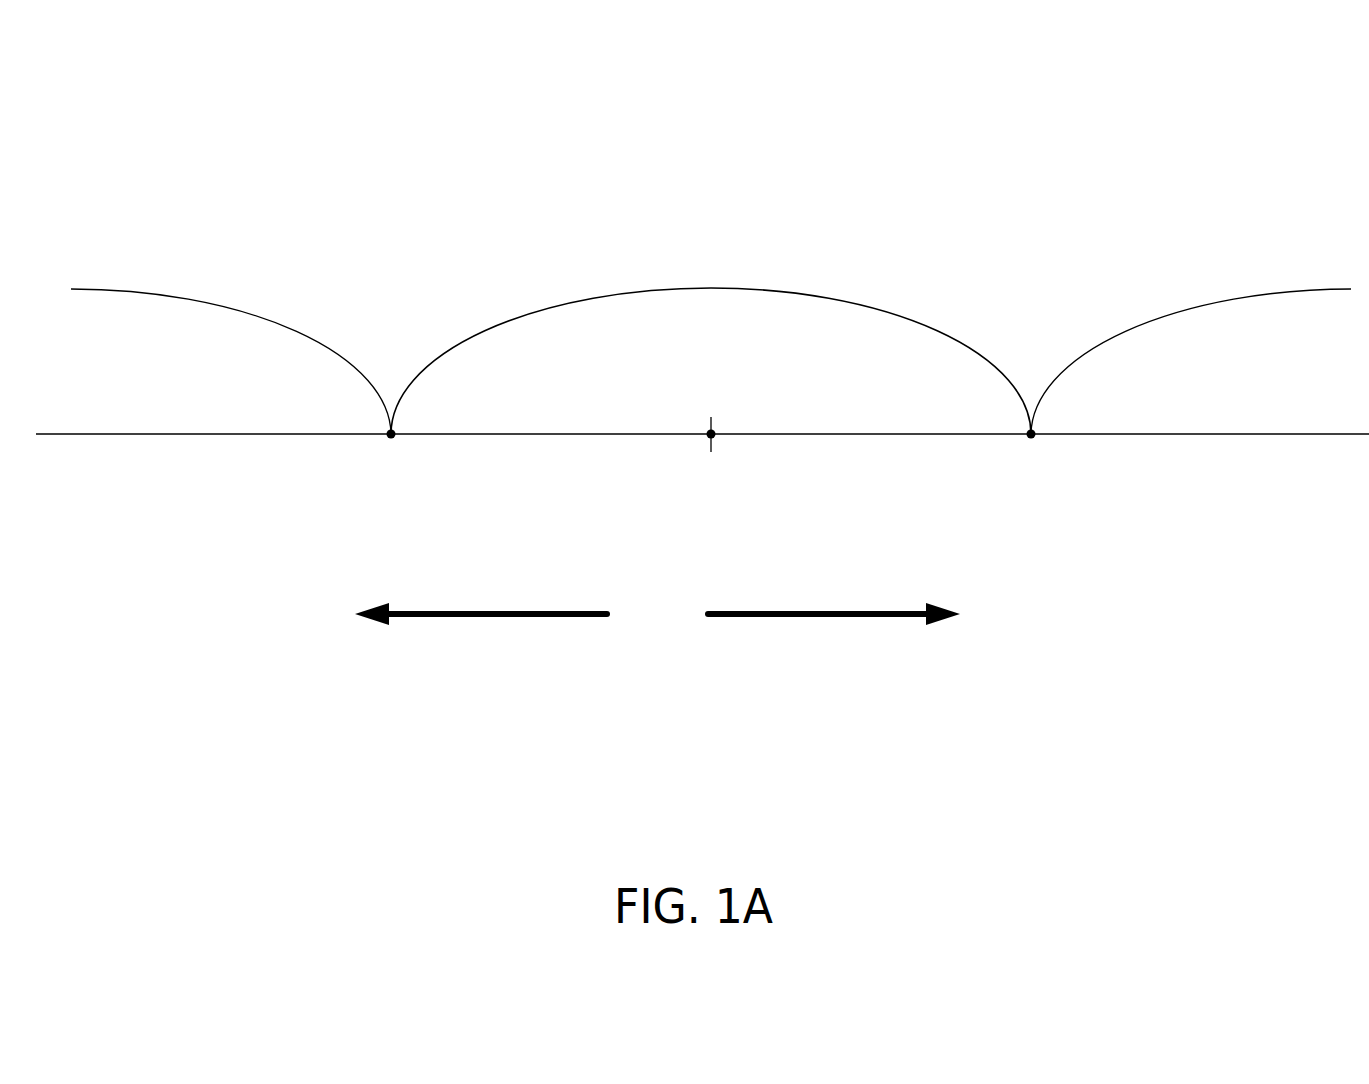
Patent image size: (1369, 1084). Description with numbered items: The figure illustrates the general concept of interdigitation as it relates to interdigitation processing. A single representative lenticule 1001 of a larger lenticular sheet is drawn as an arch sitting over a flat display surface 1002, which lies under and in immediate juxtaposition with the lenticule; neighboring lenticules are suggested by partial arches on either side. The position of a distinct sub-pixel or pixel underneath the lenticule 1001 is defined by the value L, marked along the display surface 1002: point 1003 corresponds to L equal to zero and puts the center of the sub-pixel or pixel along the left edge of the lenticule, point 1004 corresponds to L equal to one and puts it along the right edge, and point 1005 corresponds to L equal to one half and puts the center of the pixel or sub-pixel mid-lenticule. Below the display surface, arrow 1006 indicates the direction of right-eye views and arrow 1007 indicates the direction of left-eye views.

The lenticule 1001 is at (716, 262).
The display surface 1002 is at (1263, 446).
The point 1003 is at (372, 443).
The point 1004 is at (1012, 444).
The point 1005 is at (691, 444).
The arrow 1006 is at (481, 642).
The arrow 1007 is at (834, 642).